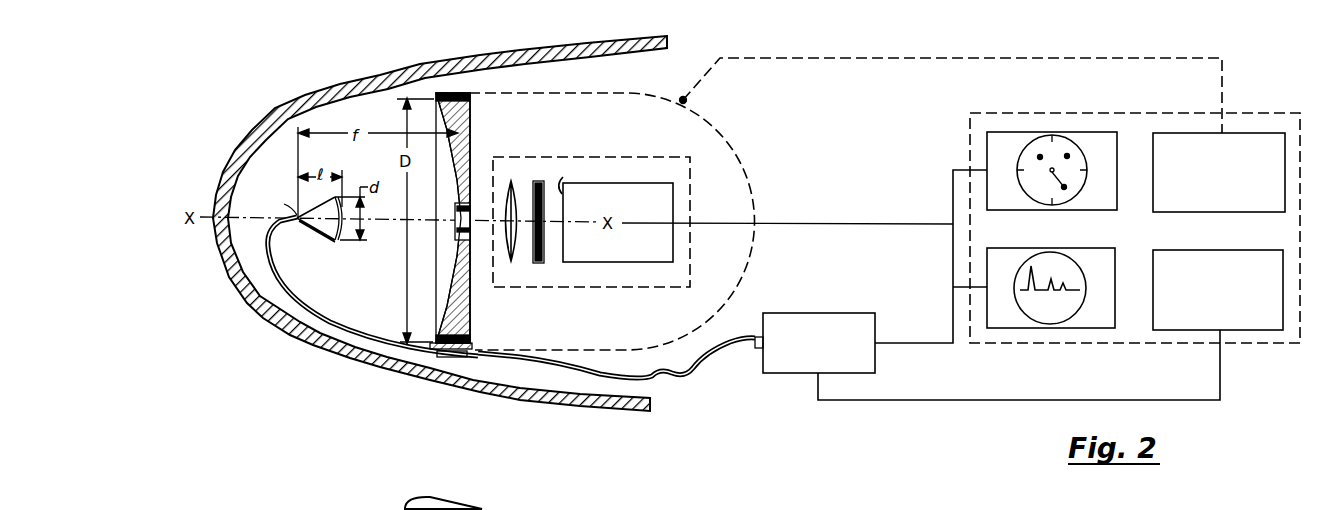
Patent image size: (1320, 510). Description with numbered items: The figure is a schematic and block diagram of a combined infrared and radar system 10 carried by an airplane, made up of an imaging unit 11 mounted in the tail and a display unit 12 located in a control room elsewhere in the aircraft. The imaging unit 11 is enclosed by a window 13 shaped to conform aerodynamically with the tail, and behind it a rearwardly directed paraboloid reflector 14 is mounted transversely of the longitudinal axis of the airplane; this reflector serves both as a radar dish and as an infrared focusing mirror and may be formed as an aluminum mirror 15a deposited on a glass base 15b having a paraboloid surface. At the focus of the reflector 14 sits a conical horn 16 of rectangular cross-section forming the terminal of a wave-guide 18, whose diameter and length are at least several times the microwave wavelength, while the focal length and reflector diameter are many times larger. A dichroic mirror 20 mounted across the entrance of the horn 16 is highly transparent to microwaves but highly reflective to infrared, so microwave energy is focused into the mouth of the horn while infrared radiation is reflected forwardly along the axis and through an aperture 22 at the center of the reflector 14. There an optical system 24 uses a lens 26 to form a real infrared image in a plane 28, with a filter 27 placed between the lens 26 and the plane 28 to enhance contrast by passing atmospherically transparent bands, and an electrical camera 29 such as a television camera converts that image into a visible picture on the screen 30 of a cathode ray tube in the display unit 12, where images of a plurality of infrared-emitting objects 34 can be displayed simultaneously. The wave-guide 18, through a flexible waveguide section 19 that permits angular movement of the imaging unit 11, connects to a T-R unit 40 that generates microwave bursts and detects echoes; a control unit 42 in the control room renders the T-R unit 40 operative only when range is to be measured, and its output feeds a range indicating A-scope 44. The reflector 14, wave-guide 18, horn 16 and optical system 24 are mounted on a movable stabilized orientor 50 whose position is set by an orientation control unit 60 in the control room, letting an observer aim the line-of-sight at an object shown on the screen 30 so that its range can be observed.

The combined infrared and radar system 10 is at (885, 36).
The imaging unit 11 is at (546, 88).
The display unit 12 is at (970, 134).
The window 13 is at (290, 103).
The paraboloid reflector 14 is at (438, 225).
The aluminum mirror 15a is at (436, 114).
The glass base 15b is at (468, 122).
The conical horn 16 is at (317, 229).
The wave-guide 18 is at (266, 258).
The flexible waveguide section 19 is at (690, 376).
The dichroic mirror 20 is at (342, 241).
The aperture 22 is at (466, 233).
The optical system 24 is at (650, 158).
The lens 26 is at (518, 175).
The filter 27 is at (551, 175).
The image plane 28 is at (563, 190).
The electrical camera 29 is at (668, 184).
The screen 30 is at (1052, 162).
The objects 34 is at (1040, 157).
The T-R unit 40 is at (868, 318).
The control unit 42 is at (1252, 251).
The A-scope 44 is at (1079, 250).
The stabilized orientor 50 is at (686, 101).
The orientation control unit 60 is at (1282, 136).